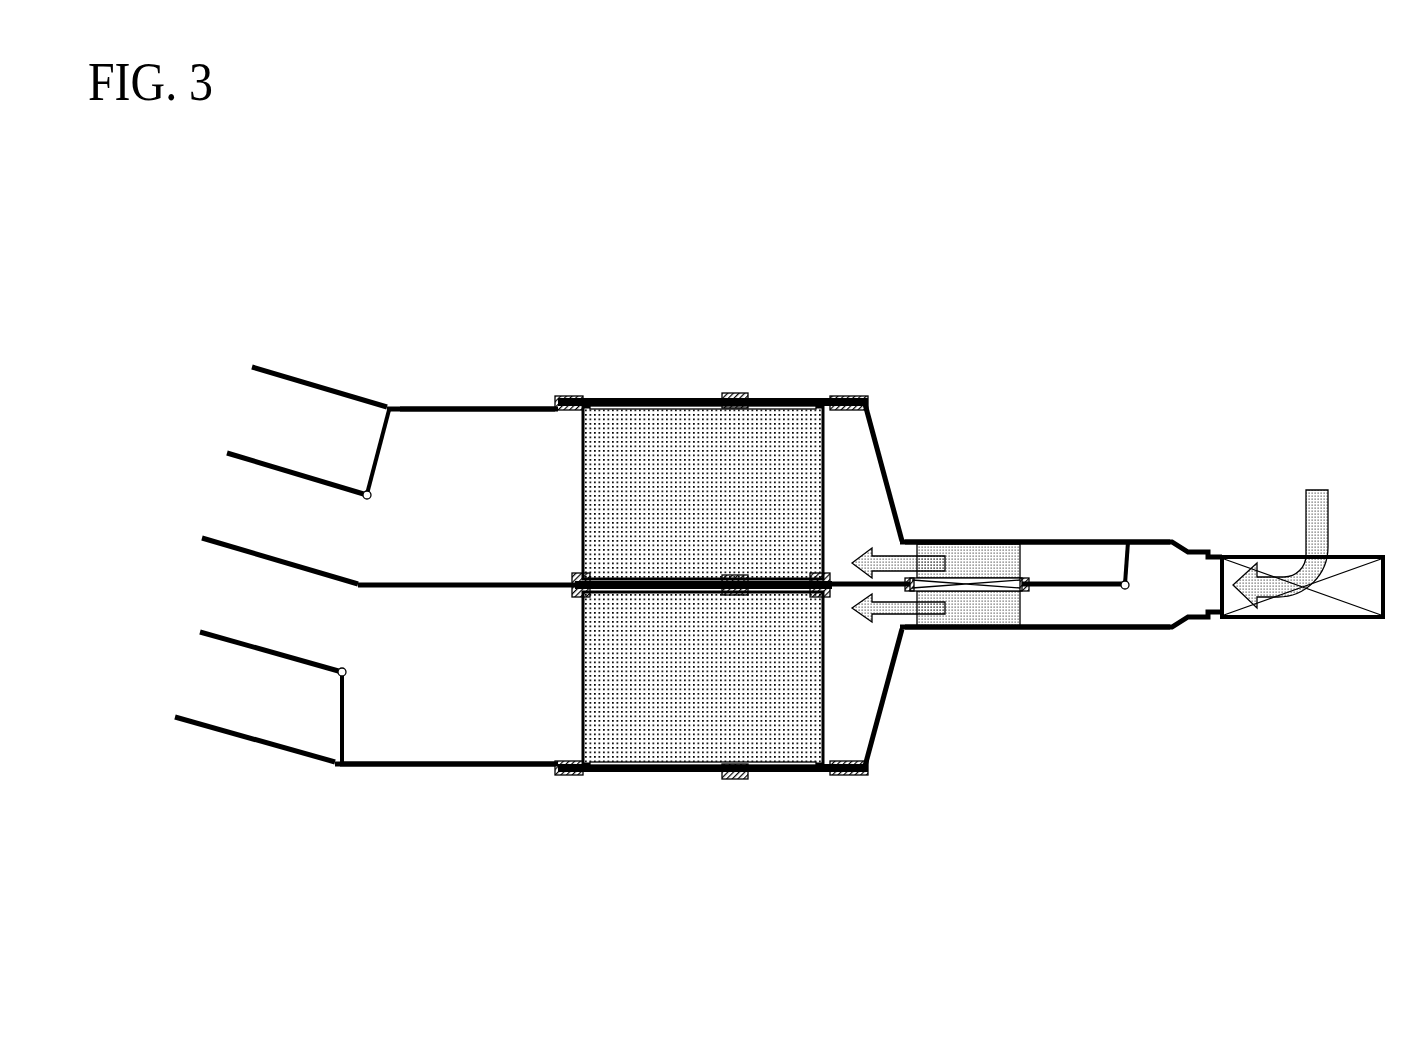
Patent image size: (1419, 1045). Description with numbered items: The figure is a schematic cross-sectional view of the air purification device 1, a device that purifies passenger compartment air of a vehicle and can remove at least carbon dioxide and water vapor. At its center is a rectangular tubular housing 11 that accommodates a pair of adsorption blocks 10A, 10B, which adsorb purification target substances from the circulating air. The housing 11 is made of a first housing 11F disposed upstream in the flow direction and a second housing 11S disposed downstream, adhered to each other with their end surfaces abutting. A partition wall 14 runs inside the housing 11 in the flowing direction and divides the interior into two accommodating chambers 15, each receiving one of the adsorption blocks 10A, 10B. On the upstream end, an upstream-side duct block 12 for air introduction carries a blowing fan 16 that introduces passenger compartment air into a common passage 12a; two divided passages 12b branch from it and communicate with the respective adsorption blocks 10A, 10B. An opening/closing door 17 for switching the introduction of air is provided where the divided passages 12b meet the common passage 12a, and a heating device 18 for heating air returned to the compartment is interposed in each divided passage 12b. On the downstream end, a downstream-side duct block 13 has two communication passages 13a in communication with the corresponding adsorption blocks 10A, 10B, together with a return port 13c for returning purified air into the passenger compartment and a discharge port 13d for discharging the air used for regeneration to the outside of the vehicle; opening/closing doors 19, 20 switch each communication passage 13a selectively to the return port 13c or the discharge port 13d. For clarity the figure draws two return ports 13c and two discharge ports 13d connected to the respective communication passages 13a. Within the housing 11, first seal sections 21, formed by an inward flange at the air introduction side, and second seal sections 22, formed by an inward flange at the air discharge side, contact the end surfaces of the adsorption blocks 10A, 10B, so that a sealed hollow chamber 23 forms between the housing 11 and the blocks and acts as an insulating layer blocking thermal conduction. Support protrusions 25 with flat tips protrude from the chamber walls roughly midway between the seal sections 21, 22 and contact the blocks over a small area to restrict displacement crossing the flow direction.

The air purification device 1 is at (918, 328).
The adsorption block 10A is at (620, 445).
The adsorption block 10B is at (620, 735).
The housing 11 is at (727, 493).
The second housing 11S is at (688, 397).
The first housing 11F is at (787, 398).
The upstream-side duct block 12 is at (1022, 540).
The common passage 12a is at (1127, 630).
The divided passage 12b is at (865, 487).
The downstream-side duct block 13 is at (433, 767).
The communication passage 13a is at (487, 407).
The return port 13c is at (227, 452).
The discharge port 13d is at (252, 368).
The partition wall 14 is at (620, 590).
The accommodating chamber 15 is at (658, 407).
The blowing fan 16 is at (1373, 593).
The opening/closing door 17 is at (1128, 560).
The heating device 18 is at (975, 555).
The opening/closing door 19 is at (366, 432).
The opening/closing door 20 is at (322, 725).
The first seal section 21 is at (862, 403).
The second seal section 22 is at (550, 405).
The hollow chamber 23 is at (757, 403).
The support protrusion 25 is at (710, 408).